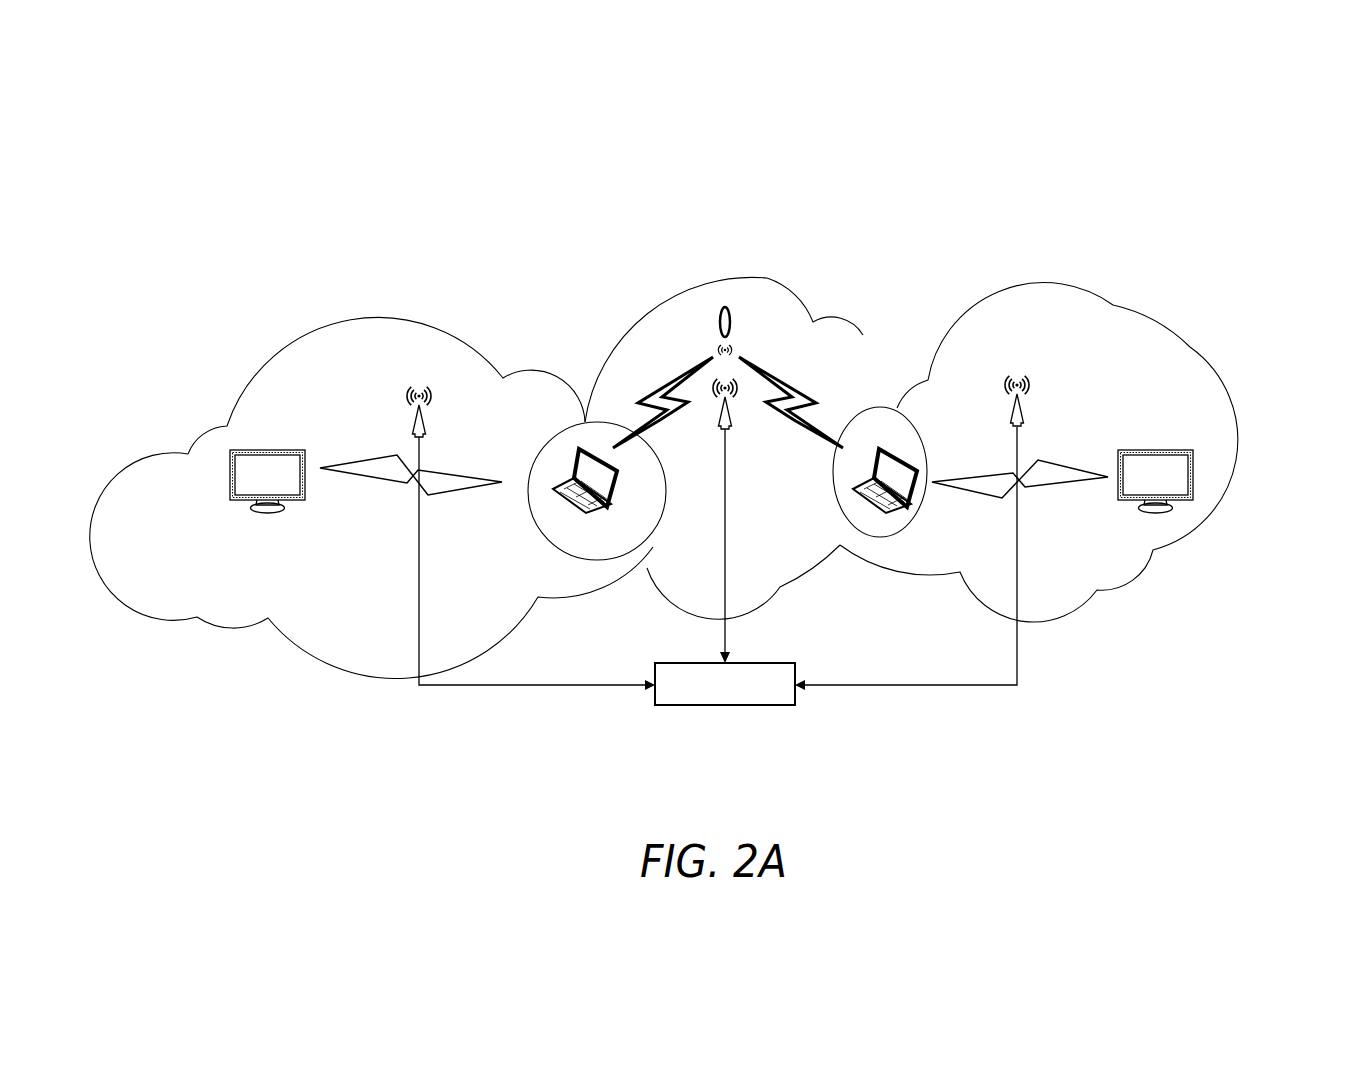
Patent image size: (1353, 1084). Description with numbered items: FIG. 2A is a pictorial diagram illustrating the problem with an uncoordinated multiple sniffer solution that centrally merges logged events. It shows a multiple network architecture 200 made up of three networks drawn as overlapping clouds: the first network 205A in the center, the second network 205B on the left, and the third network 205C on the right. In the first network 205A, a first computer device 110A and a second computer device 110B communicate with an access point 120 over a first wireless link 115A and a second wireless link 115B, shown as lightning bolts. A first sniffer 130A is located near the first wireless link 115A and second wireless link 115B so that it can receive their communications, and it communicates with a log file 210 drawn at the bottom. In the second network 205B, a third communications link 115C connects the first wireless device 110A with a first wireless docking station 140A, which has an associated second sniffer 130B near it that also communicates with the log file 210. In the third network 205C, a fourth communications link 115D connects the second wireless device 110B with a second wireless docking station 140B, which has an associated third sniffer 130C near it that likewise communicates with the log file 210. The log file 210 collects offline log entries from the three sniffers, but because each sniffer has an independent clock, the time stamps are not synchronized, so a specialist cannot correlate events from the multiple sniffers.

The multiple network architecture 200 is at (1233, 160).
The first network BSS3 205A is at (767, 278).
The second network BSS1 205B is at (435, 332).
The third network BSS2 205C is at (1110, 303).
The access point 120 is at (722, 305).
The first sniffer 130A is at (731, 430).
The second sniffer 130B is at (425, 432).
The third sniffer 130C is at (1022, 406).
The first computer device 110A is at (601, 506).
The second computer device 110B is at (857, 506).
The first wireless docking station 140A is at (232, 500).
The second wireless docking station 140B is at (1193, 498).
The first wireless link 115A is at (663, 385).
The second wireless link 115B is at (806, 384).
The third communications link 115C is at (383, 484).
The fourth communications link 115D is at (1040, 496).
The log file 210 is at (768, 662).